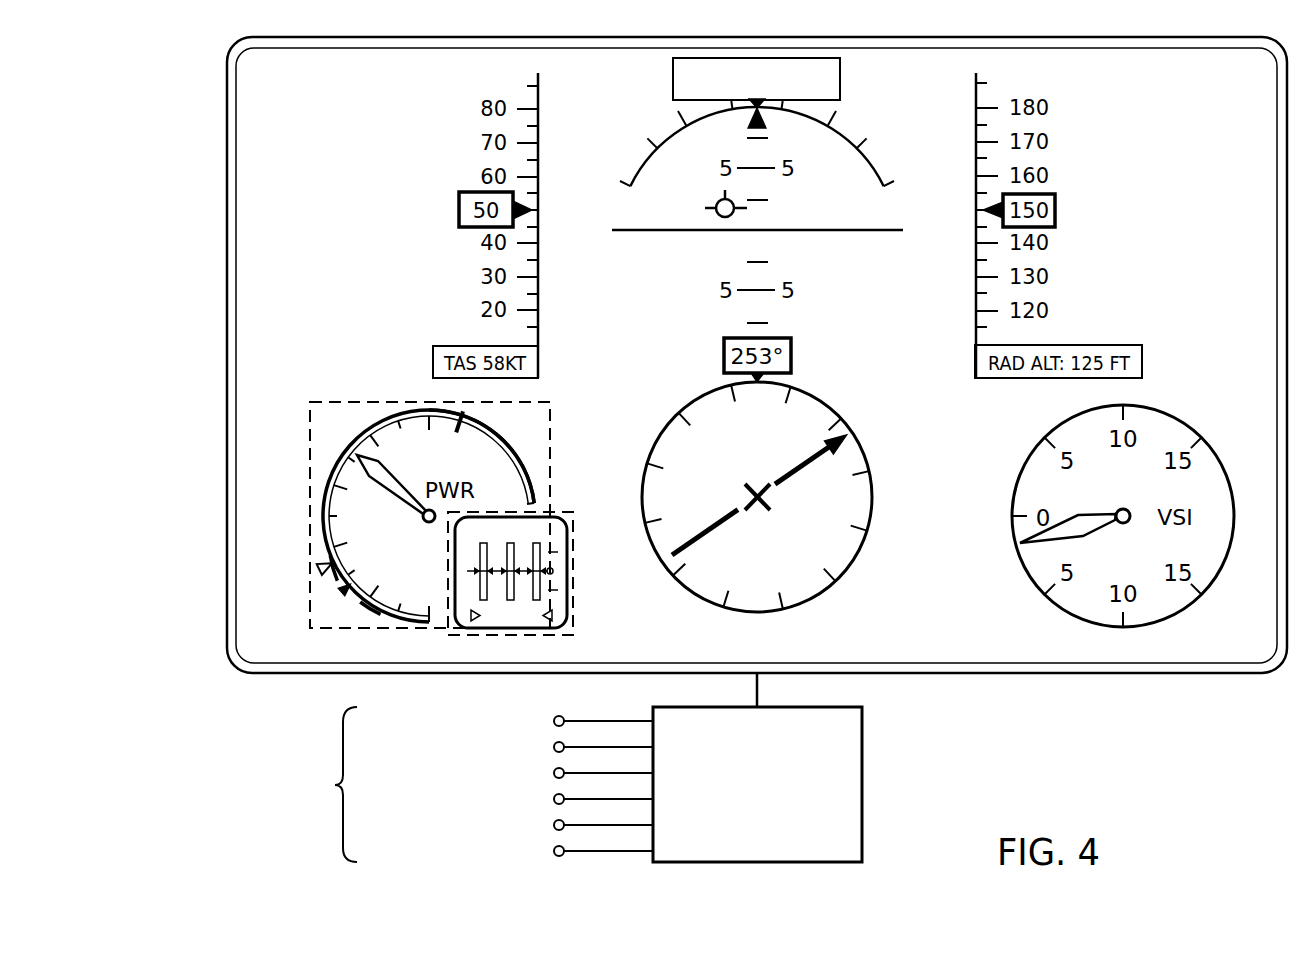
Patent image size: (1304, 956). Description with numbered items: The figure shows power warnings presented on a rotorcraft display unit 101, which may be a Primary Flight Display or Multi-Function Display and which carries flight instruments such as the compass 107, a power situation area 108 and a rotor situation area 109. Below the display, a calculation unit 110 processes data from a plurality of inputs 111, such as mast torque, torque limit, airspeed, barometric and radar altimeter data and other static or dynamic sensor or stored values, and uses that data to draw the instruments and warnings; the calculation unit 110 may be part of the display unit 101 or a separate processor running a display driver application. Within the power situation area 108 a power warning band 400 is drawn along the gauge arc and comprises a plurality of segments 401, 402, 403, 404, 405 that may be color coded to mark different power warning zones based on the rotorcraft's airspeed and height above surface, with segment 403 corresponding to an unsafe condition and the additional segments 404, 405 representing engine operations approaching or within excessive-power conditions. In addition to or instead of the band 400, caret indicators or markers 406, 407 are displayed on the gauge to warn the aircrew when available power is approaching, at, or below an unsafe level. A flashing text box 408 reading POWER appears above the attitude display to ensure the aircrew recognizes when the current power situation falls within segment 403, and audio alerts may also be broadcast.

The display unit 101 is at (224, 186).
The compass 107 is at (873, 497).
The power situation area 108 is at (310, 527).
The rotor situation area 109 is at (567, 571).
The calculation unit 110 is at (862, 783).
The inputs 111 is at (469, 785).
The power warning band 400 is at (364, 421).
The power warning segment 401 is at (337, 468).
The power warning segment 402 is at (342, 591).
The power warning segment 403 is at (370, 604).
The warning segment 404 is at (430, 405).
The warning segment 405 is at (502, 434).
The caret indicator 406 is at (318, 569).
The caret indicator 407 is at (345, 576).
The flashing text box 408 is at (840, 78).